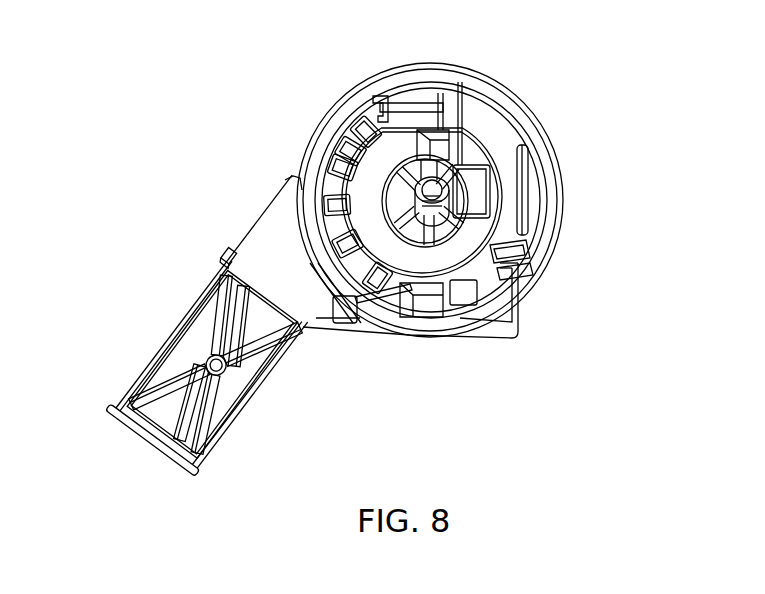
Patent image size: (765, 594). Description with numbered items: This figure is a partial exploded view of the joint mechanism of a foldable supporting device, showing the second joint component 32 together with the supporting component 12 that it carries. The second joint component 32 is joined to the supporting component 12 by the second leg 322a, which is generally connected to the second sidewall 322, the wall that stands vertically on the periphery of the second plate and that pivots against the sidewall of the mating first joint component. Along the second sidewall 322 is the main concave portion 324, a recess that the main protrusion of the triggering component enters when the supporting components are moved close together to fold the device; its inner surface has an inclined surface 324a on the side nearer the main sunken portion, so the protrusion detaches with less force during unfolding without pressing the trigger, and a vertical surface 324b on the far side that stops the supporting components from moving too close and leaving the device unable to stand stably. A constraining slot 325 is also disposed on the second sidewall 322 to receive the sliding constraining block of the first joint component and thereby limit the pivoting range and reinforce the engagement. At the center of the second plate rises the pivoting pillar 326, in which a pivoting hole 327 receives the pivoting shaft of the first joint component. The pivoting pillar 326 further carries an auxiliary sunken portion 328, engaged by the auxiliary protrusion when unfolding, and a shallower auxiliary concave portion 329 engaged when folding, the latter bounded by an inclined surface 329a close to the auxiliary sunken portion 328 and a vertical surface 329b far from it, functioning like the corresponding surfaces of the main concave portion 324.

The supporting component 12 is at (148, 450).
The second joint component 32 is at (572, 238).
The second sidewall 322 is at (418, 68).
The second leg 322a is at (226, 258).
The main concave portion 324 is at (340, 258).
The inclined surface 324a is at (366, 274).
The vertical surface 324b is at (315, 225).
The constraining slot 325 is at (380, 110).
The pivoting pillar 326 is at (370, 168).
The pivoting hole 327 is at (517, 275).
The auxiliary sunken portion 328 is at (440, 157).
The auxiliary concave portion 329 is at (488, 170).
The inclined surface 329a is at (477, 167).
The vertical surface 329b is at (483, 177).